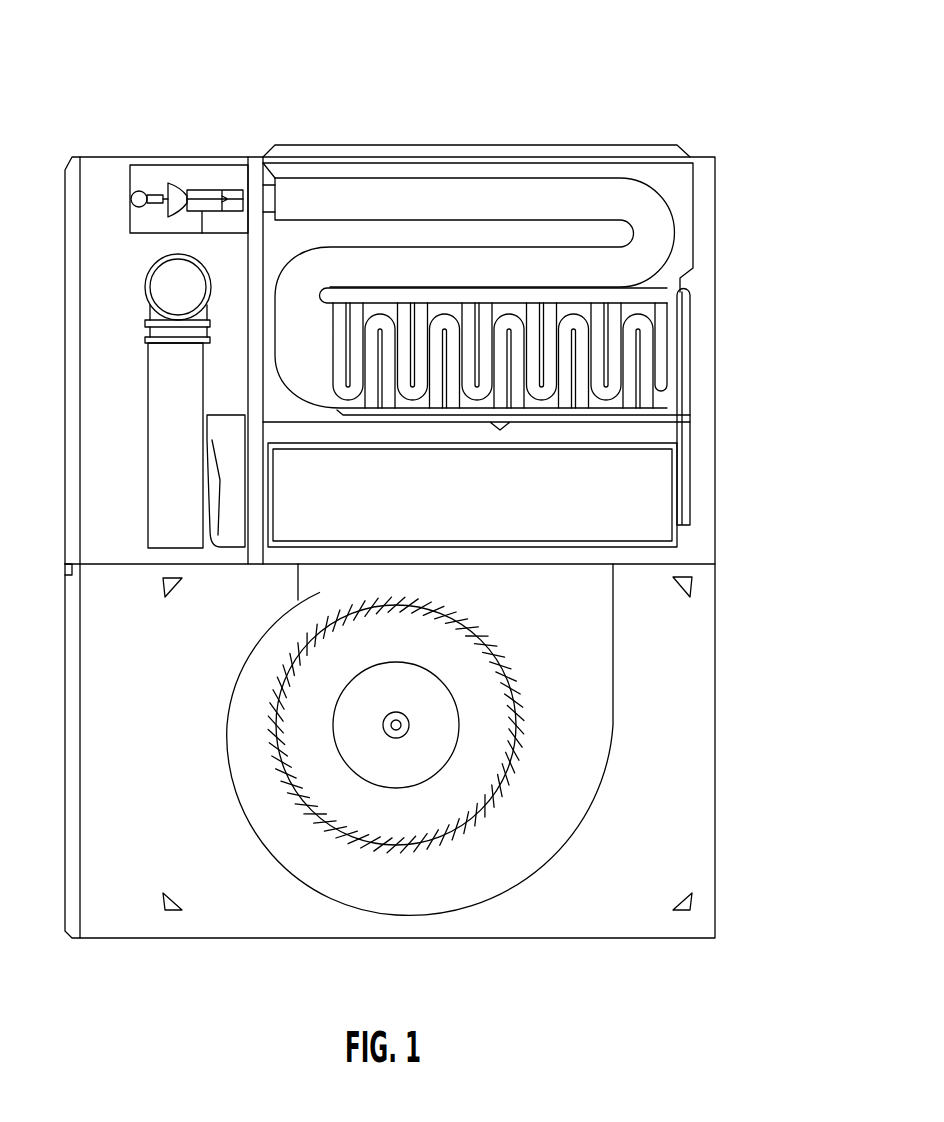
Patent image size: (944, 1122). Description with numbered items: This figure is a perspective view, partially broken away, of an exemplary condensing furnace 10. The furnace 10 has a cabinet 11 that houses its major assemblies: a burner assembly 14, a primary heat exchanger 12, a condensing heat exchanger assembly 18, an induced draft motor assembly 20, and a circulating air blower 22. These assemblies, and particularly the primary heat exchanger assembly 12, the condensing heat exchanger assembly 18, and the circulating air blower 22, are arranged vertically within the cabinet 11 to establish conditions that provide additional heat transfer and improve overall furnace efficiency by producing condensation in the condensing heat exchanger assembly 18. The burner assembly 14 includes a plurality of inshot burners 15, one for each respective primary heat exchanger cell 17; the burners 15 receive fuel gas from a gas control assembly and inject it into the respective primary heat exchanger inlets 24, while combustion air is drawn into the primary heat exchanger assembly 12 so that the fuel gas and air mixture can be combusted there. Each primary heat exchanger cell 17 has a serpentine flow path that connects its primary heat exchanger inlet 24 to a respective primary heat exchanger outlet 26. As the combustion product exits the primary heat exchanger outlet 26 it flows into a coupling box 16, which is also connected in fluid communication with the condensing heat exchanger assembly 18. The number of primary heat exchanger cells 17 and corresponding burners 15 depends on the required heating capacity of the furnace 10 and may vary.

The condensing furnace 10 is at (580, 82).
The cabinet 11 is at (100, 157).
The primary heat exchanger 12 is at (348, 172).
The burner assembly 14 is at (182, 175).
The inshot burner 15 is at (208, 183).
The coupling box 16 is at (672, 412).
The primary heat exchanger cell 17 is at (525, 255).
The condensing heat exchanger assembly 18 is at (655, 528).
The induced draft motor assembly 20 is at (158, 458).
The circulating air blower 22 is at (575, 648).
The primary heat exchanger inlet 24 is at (273, 196).
The primary heat exchanger outlet 26 is at (678, 335).